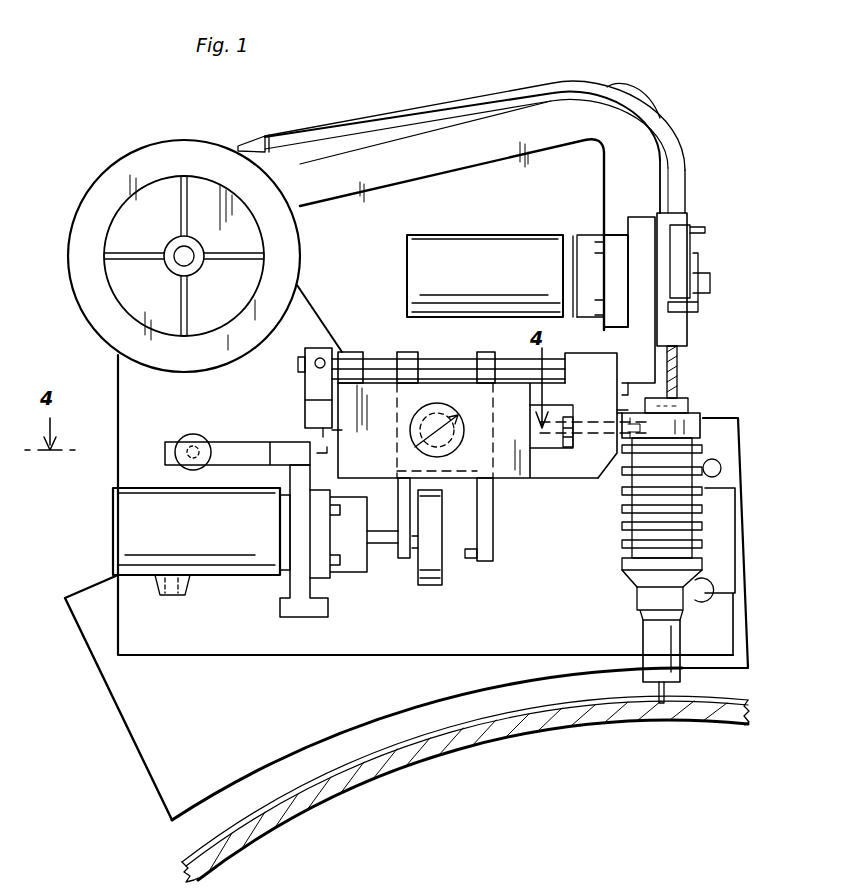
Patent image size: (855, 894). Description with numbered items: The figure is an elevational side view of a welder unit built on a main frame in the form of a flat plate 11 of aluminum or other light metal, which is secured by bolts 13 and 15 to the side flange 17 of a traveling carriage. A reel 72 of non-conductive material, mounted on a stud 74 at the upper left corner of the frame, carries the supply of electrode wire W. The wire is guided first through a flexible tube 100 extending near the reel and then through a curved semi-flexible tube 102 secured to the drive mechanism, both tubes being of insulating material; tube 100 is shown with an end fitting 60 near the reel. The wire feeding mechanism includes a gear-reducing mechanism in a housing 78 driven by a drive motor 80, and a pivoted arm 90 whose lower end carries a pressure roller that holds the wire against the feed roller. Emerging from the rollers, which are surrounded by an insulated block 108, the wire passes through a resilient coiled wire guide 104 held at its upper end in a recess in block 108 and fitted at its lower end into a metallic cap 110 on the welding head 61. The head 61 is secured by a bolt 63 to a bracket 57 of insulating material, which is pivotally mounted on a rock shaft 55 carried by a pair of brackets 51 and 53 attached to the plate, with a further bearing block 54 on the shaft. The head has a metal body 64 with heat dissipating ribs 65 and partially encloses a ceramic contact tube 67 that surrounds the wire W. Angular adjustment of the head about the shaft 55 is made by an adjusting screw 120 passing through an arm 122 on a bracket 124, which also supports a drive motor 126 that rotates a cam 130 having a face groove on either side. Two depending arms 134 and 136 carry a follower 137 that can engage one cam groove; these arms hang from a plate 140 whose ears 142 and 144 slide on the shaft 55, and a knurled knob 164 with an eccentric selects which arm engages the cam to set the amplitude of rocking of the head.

The flat plate 11 is at (120, 383).
The bolt 13 is at (165, 600).
The bolt 15 is at (740, 590).
The side flange 17 is at (95, 667).
The bracket 51 is at (647, 338).
The bracket 53 is at (322, 348).
The bearing block 54 is at (355, 352).
The rock shaft 55 is at (450, 360).
The bracket 57 is at (592, 365).
The arm bracket 60 is at (246, 140).
The welding head 61 is at (713, 414).
The bolt 63 is at (570, 448).
The metal body 64 is at (700, 430).
The heat dissipating ribs 65 is at (622, 495).
The ceramic head or contact tube 67 is at (643, 634).
The reel 72 is at (160, 148).
The stud 74 is at (192, 264).
The housing 78 is at (612, 240).
The drive motor 80 is at (470, 245).
The pivoted arm 90 is at (699, 246).
The flexible tube 100 is at (343, 128).
The curved semi-flexible tube 102 is at (672, 150).
The wire guide 104 is at (678, 369).
The insulated block 108 is at (688, 324).
The metallic cap 110 is at (688, 402).
The adjusting screw 120 is at (193, 434).
The arm 122 is at (244, 440).
The bracket 124 is at (293, 590).
The drive motor 126 is at (214, 535).
The cam 130 is at (434, 580).
The depending arm 134 is at (398, 500).
The depending arm 136 is at (493, 520).
The follower 137 is at (470, 560).
The plate 140 is at (517, 481).
The ear 142 is at (420, 337).
The ear 144 is at (487, 353).
The rotatable knurled knob 164 is at (462, 440).
The electrode wire W is at (688, 700).